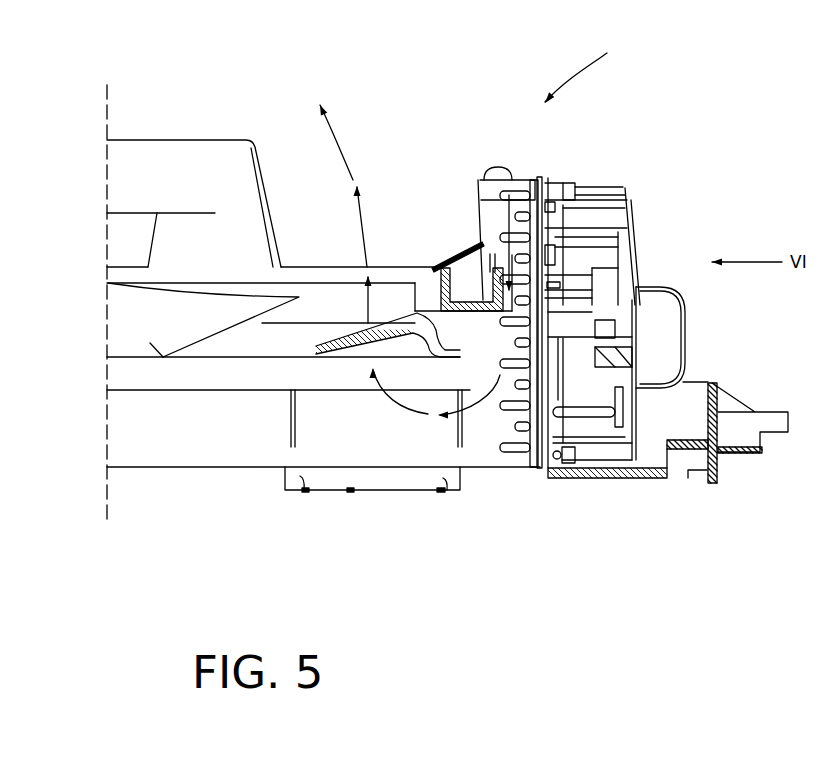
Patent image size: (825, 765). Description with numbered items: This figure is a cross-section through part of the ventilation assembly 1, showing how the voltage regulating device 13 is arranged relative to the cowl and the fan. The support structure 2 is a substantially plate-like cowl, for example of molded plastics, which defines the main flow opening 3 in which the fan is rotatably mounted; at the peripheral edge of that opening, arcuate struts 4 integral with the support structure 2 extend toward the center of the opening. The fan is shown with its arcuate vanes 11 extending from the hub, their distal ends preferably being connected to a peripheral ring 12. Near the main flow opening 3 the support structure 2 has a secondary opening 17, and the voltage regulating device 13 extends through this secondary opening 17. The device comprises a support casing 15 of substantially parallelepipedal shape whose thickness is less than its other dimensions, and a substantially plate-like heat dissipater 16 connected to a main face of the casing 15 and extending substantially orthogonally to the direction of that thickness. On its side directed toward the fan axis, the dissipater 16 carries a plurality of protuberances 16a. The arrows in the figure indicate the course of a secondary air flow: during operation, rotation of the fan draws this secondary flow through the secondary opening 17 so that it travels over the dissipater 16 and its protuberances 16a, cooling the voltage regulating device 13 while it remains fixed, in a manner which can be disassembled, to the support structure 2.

The ventilation assembly 1 is at (555, 510).
The support structure 2 is at (221, 470).
The main flow opening 3 is at (432, 268).
The arcuate struts 4 is at (198, 157).
The arcuate vanes 11 is at (282, 350).
The peripheral ring 12 is at (345, 290).
The voltage regulating device 13 is at (652, 260).
The support casing 15 is at (598, 190).
The heat dissipater 16 is at (547, 187).
The protuberances 16a is at (500, 228).
The secondary opening 17 is at (505, 267).